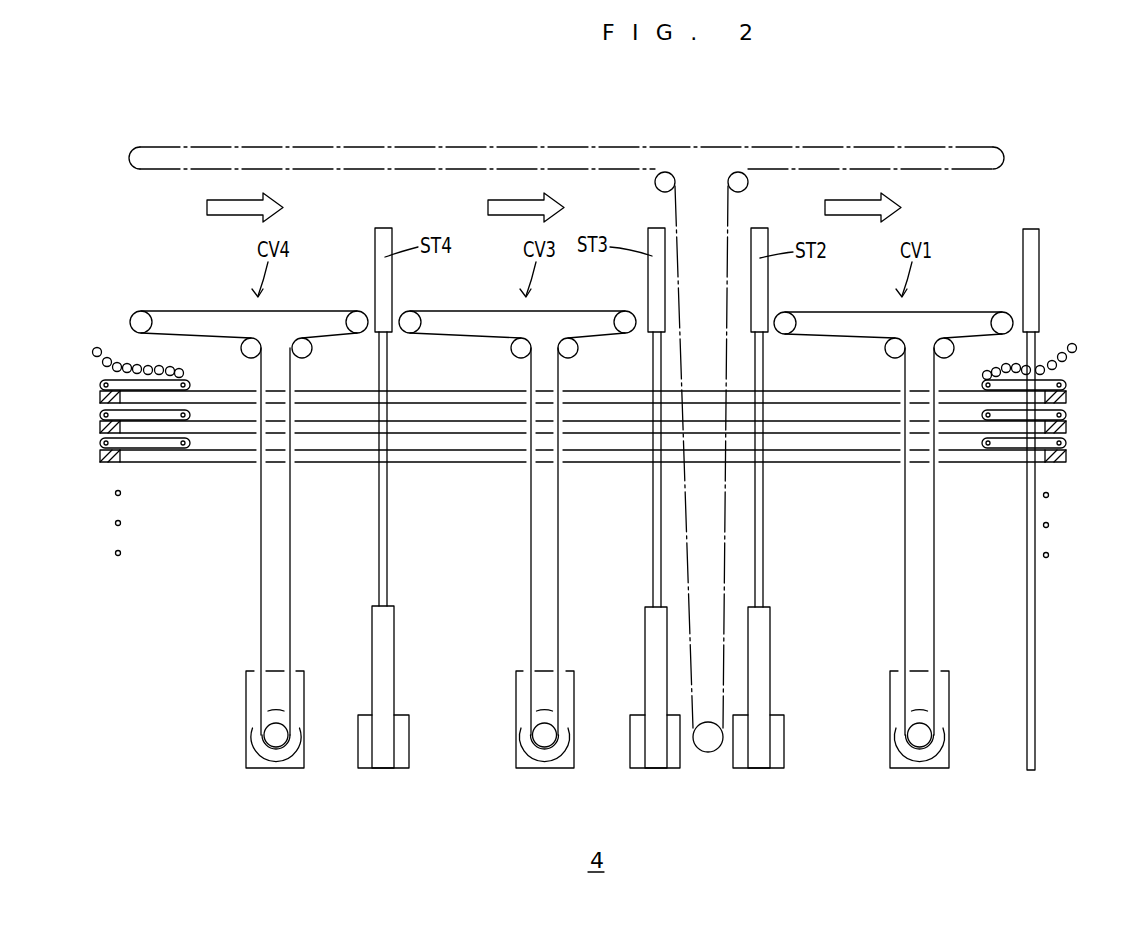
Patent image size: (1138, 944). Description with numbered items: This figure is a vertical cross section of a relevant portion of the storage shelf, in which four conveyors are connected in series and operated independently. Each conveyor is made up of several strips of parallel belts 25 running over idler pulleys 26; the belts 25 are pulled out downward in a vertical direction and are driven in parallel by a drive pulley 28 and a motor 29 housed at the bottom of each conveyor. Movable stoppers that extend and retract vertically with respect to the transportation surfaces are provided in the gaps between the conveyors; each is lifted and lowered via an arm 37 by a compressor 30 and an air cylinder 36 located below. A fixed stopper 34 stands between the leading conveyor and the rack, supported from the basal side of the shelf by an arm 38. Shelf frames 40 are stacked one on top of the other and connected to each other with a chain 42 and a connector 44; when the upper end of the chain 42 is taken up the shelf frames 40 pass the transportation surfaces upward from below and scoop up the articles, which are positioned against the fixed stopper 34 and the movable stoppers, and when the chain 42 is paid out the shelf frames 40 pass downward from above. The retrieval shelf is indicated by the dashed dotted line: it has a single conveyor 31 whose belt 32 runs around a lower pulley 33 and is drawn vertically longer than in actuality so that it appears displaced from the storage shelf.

The belt 25 is at (290, 537).
The idler pulley 26 is at (142, 318).
The drive pulley 28 is at (277, 742).
The motor 29 is at (248, 760).
The compressor 30 is at (401, 760).
The conveyor 31 is at (575, 140).
The belt 32 is at (660, 147).
The tension pulley 33 is at (708, 753).
The fixed stopper 34 is at (1037, 272).
The air cylinder 36 is at (394, 672).
The arm 37 is at (387, 572).
The arm 38 is at (1036, 632).
The shelf frame 40 is at (205, 427).
The chain 42 is at (93, 350).
The connector 44 is at (148, 388).